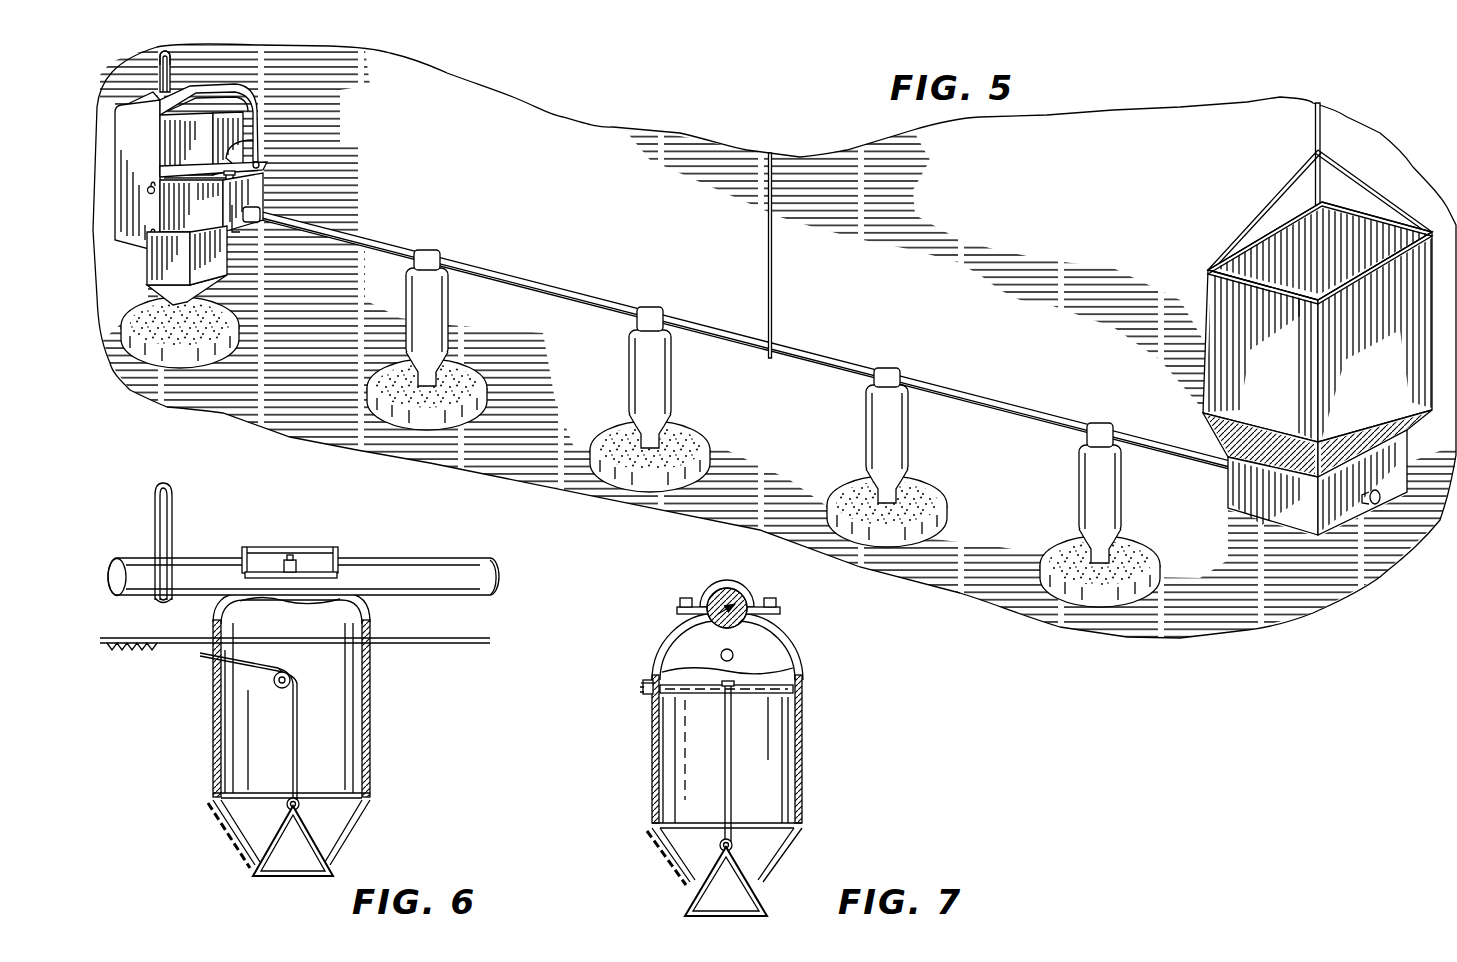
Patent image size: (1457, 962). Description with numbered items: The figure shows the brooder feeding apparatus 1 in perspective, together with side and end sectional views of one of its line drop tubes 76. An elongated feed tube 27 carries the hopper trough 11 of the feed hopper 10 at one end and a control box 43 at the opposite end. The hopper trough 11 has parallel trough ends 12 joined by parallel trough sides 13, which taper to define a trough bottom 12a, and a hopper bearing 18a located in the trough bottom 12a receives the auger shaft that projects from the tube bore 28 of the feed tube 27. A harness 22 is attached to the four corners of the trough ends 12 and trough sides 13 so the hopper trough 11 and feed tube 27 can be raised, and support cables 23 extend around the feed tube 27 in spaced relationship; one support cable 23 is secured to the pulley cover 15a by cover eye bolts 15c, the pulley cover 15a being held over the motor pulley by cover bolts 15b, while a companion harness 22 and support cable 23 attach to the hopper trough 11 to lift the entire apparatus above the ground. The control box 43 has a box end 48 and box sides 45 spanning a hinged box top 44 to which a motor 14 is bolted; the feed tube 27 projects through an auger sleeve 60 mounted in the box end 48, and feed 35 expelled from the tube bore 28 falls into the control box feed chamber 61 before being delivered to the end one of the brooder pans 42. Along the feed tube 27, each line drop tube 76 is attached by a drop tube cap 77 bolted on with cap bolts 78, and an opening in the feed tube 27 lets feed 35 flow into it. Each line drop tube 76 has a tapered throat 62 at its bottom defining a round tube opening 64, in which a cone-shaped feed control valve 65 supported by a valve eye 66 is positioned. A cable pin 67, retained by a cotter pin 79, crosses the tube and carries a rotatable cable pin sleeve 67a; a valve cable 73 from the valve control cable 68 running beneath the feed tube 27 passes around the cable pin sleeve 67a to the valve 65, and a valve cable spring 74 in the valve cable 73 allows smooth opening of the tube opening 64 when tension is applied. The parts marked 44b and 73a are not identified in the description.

In FIG. 5, the brooder feeding apparatus 1 is at (1000, 255).
In FIG. 5, the feed hopper 10 is at (1287, 356).
In FIG. 5, the hopper trough 11 is at (1195, 345).
In FIG. 5, the trough ends 12 is at (1285, 248).
In FIG. 5, the trough bottom 12a is at (1395, 447).
In FIG. 5, the trough sides 13 is at (1370, 251).
In FIG. 5, the motor 14 is at (173, 163).
In FIG. 5, the pulley cover 15a is at (150, 149).
In FIG. 5, the cover bolts 15b is at (148, 194).
In FIG. 5, the cover eye bolts 15c is at (158, 60).
In FIG. 5, the hopper bearing 18a is at (1374, 504).
In FIG. 5, the harness 22 is at (1257, 212).
In FIG. 5, the support cables 23 is at (170, 60).
In FIG. 6, the support cables 23 is at (172, 525).
In FIG. 5, the feed tube 27 is at (488, 262).
In FIG. 6, the feed tube 27 is at (436, 560).
In FIG. 7, the feed tube 27 is at (712, 622).
In FIG. 6, the tube bore 28 is at (502, 578).
In FIG. 5, the feed 35 is at (233, 333).
In FIG. 5, the brooder pans 42 is at (200, 356).
In FIG. 5, the control box 43 is at (252, 101).
In FIG. 5, the box top 44 is at (263, 166).
In FIG. 5, the mounting bracket 44b is at (227, 165).
In FIG. 5, the box sides 45 is at (170, 215).
In FIG. 5, the box end 48 is at (236, 220).
In FIG. 5, the auger sleeve 60 is at (261, 212).
In FIG. 5, the control box feed chamber 61 is at (232, 288).
In FIG. 6, the tapered throat 62 is at (356, 808).
In FIG. 7, the tapered throat 62 is at (785, 840).
In FIG. 6, the round tube opening 64 is at (255, 868).
In FIG. 7, the round tube opening 64 is at (762, 884).
In FIG. 5, the cone-shaped feed control valve 65 is at (215, 315).
In FIG. 6, the cone-shaped feed control valve 65 is at (276, 868).
In FIG. 7, the cone-shaped feed control valve 65 is at (715, 905).
In FIG. 6, the valve eye 66 is at (298, 800).
In FIG. 7, the valve eye 66 is at (731, 842).
In FIG. 6, the cable pin 67 is at (289, 690).
In FIG. 7, the cable pin 67 is at (648, 682).
In FIG. 6, the cable pin sleeve 67a is at (278, 686).
In FIG. 7, the cable pin sleeve 67a is at (722, 694).
In FIG. 6, the valve control cable 68 is at (410, 645).
In FIG. 7, the valve control cable 68 is at (726, 689).
In FIG. 6, the valve cables 73 is at (182, 660).
In FIG. 7, the valve cables 73 is at (723, 782).
In FIG. 7, the rod opening 73a is at (733, 655).
In FIG. 6, the valve cable spring 74 is at (140, 652).
In FIG. 5, the line drop tubes 76 is at (400, 310).
In FIG. 6, the line drop tubes 76 is at (385, 728).
In FIG. 7, the line drop tubes 76 is at (808, 740).
In FIG. 5, the drop tube cap 77 is at (432, 250).
In FIG. 6, the drop tube cap 77 is at (278, 548).
In FIG. 7, the drop tube cap 77 is at (745, 598).
In FIG. 6, the cap bolts 78 is at (292, 556).
In FIG. 7, the cap bolts 78 is at (685, 598).
In FIG. 7, the cotter pin 79 is at (645, 703).